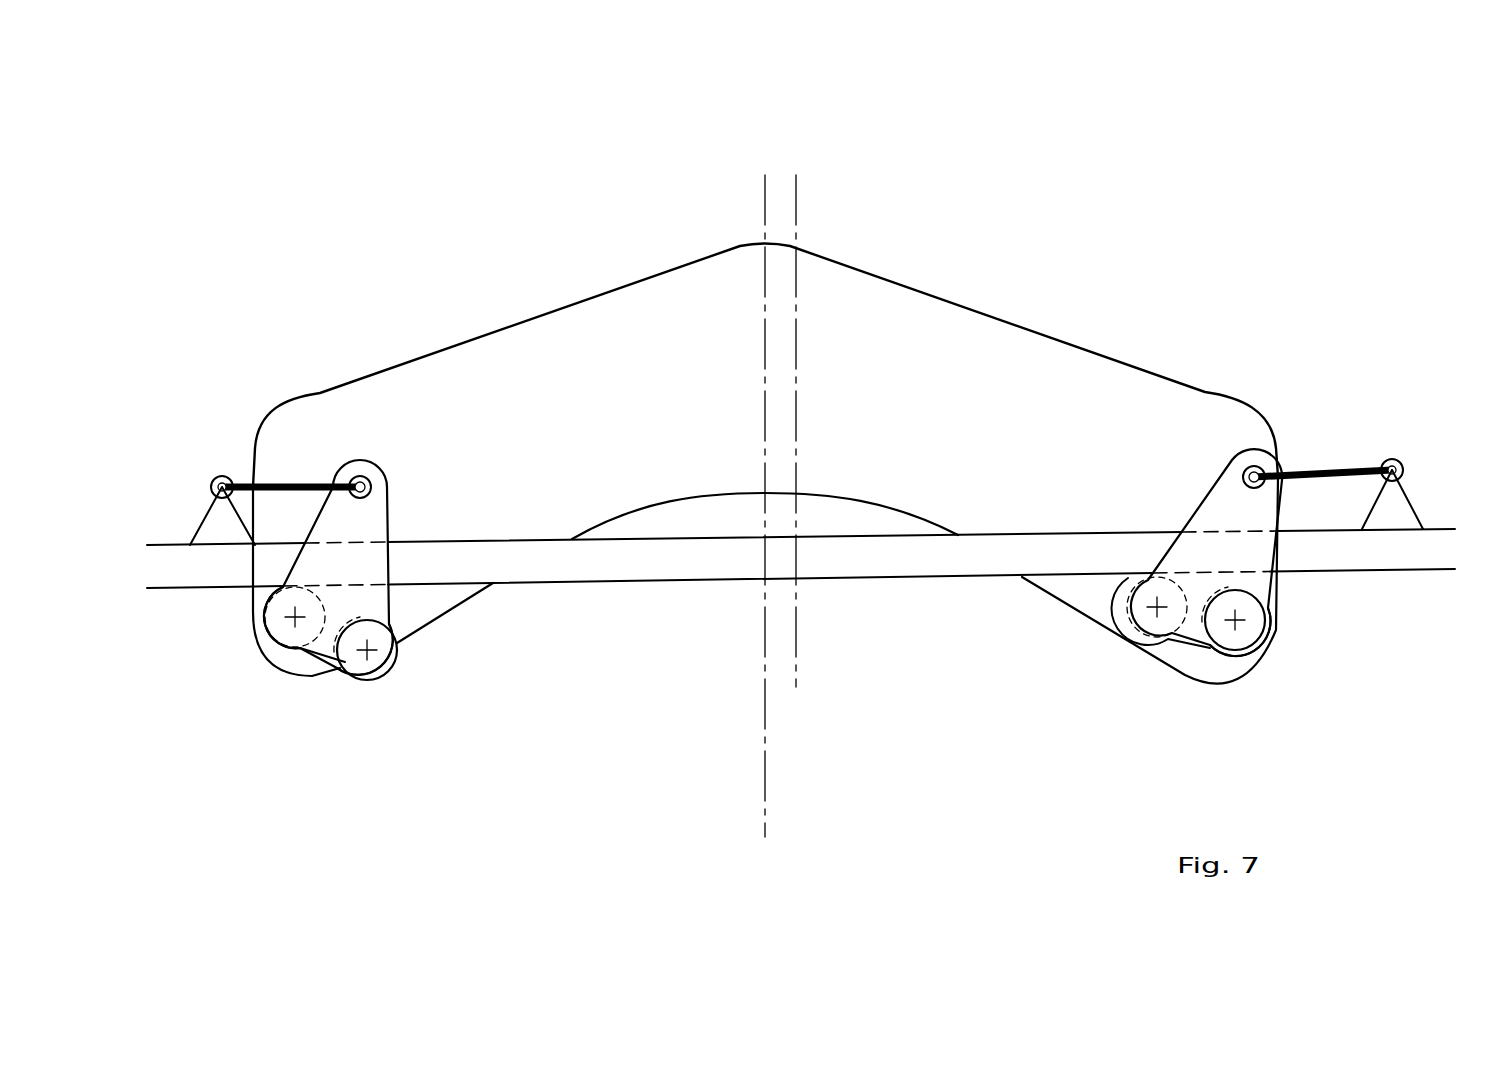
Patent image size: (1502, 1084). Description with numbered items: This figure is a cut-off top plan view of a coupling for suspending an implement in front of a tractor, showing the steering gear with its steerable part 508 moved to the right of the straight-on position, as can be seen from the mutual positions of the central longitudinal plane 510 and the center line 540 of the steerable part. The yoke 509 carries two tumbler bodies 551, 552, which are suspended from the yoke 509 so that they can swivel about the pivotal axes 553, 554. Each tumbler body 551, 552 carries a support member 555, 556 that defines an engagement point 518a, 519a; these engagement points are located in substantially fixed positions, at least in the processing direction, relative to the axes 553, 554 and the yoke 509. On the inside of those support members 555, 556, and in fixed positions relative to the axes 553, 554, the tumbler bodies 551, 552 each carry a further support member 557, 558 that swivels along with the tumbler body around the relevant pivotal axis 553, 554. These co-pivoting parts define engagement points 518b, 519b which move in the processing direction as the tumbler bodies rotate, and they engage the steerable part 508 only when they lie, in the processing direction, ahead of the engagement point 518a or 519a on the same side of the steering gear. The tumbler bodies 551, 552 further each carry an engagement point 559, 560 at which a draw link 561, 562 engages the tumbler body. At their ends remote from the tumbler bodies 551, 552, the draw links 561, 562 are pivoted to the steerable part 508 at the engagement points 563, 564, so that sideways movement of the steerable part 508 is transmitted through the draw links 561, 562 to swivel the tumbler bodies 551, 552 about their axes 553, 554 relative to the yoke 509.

The steerable part 508 is at (622, 560).
The yoke 509 is at (919, 384).
The central longitudinal plane 510 is at (765, 770).
The center line of the steerable part 540 is at (802, 658).
The engagement point 518a is at (244, 605).
The engagement point 518b is at (432, 634).
The engagement point 519a is at (1280, 616).
The engagement point 519b is at (1066, 597).
The tumbler body 551 is at (362, 523).
The tumbler body 552 is at (1252, 547).
The pivotal axis 553 is at (290, 645).
The pivotal axis 554 is at (1243, 627).
The support member 555 is at (290, 650).
The support member 556 is at (1222, 650).
The support member 557 is at (393, 670).
The support member 558 is at (1133, 630).
The engagement point 559 is at (360, 474).
The engagement point 560 is at (1255, 470).
The draw link 561 is at (276, 484).
The draw link 562 is at (1312, 472).
The engagement point 563 is at (221, 477).
The engagement point 564 is at (1403, 466).